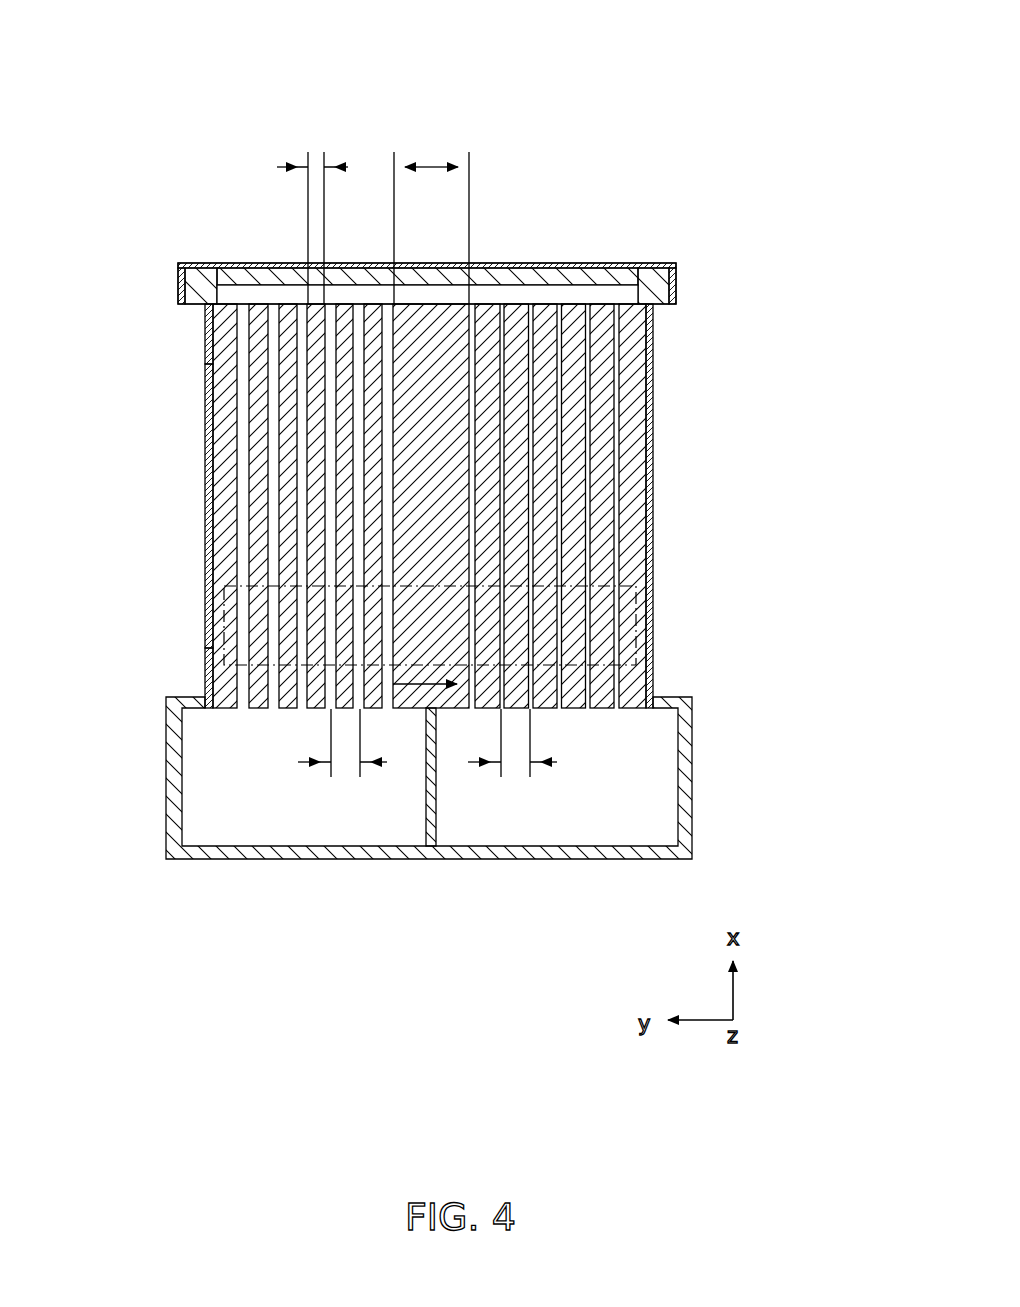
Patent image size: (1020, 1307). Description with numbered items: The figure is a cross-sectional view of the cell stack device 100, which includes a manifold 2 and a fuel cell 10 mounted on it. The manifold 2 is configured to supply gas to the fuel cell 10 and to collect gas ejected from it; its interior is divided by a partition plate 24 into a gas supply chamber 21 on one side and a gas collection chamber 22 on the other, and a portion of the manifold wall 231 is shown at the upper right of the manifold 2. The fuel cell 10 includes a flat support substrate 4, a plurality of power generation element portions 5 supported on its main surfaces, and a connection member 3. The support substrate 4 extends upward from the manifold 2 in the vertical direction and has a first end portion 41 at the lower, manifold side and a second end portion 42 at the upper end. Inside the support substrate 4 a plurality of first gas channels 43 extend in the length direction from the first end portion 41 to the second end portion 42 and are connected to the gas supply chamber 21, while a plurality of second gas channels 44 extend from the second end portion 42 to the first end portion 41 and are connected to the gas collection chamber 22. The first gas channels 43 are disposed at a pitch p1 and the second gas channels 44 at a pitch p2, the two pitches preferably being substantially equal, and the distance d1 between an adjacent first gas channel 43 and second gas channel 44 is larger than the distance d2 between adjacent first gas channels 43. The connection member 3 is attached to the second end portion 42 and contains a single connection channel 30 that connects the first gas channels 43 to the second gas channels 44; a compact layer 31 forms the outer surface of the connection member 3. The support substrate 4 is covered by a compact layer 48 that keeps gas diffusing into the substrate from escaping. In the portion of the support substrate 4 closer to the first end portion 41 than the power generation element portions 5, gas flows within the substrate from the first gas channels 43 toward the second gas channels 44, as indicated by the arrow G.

The cell stack device 100 is at (618, 137).
The connection member 3 is at (657, 261).
The connection channel 30 is at (524, 290).
The compact layer 31 is at (553, 263).
The fuel cell 10 is at (184, 437).
The support substrate 4 is at (206, 385).
The second end portion 42 is at (205, 320).
The first end portion 41 is at (206, 693).
The first gas channel 43 is at (240, 506).
The second gas channel 44 is at (618, 506).
The compact layer 48 is at (205, 570).
The power generation element portion 5 is at (222, 607).
The manifold 2 is at (161, 782).
The gas supply chamber 21 is at (318, 804).
The gas collection chamber 22 is at (580, 805).
The partition plate 24 is at (425, 810).
The case top wall 231 is at (668, 698).
The arrow G is at (447, 709).
The distance d1 is at (431, 220).
The distance d2 is at (321, 220).
The pitch p1 is at (348, 743).
The pitch p2 is at (519, 743).